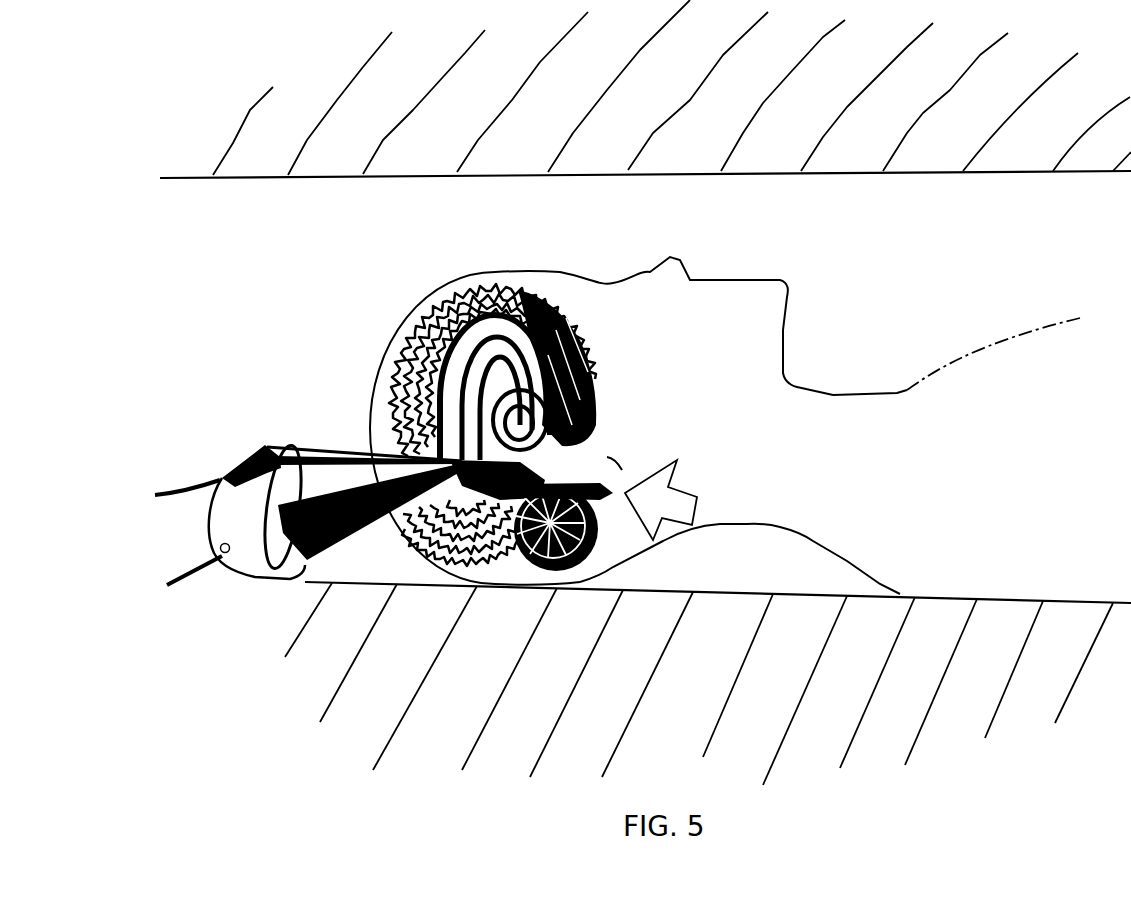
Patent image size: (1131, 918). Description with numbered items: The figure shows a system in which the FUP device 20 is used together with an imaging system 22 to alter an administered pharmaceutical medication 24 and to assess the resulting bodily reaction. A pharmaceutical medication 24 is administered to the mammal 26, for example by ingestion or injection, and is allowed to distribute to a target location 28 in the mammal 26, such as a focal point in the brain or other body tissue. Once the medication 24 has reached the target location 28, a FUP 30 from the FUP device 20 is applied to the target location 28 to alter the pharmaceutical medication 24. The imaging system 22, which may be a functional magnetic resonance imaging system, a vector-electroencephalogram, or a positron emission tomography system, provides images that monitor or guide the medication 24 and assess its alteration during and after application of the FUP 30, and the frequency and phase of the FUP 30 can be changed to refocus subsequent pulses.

The FUP device 20 is at (247, 445).
The imaging system 22 is at (645, 89).
The pharmaceutical medication 24 is at (675, 503).
The mammal 26 is at (473, 255).
The target location 28 is at (423, 520).
The FUP 30 is at (347, 457).